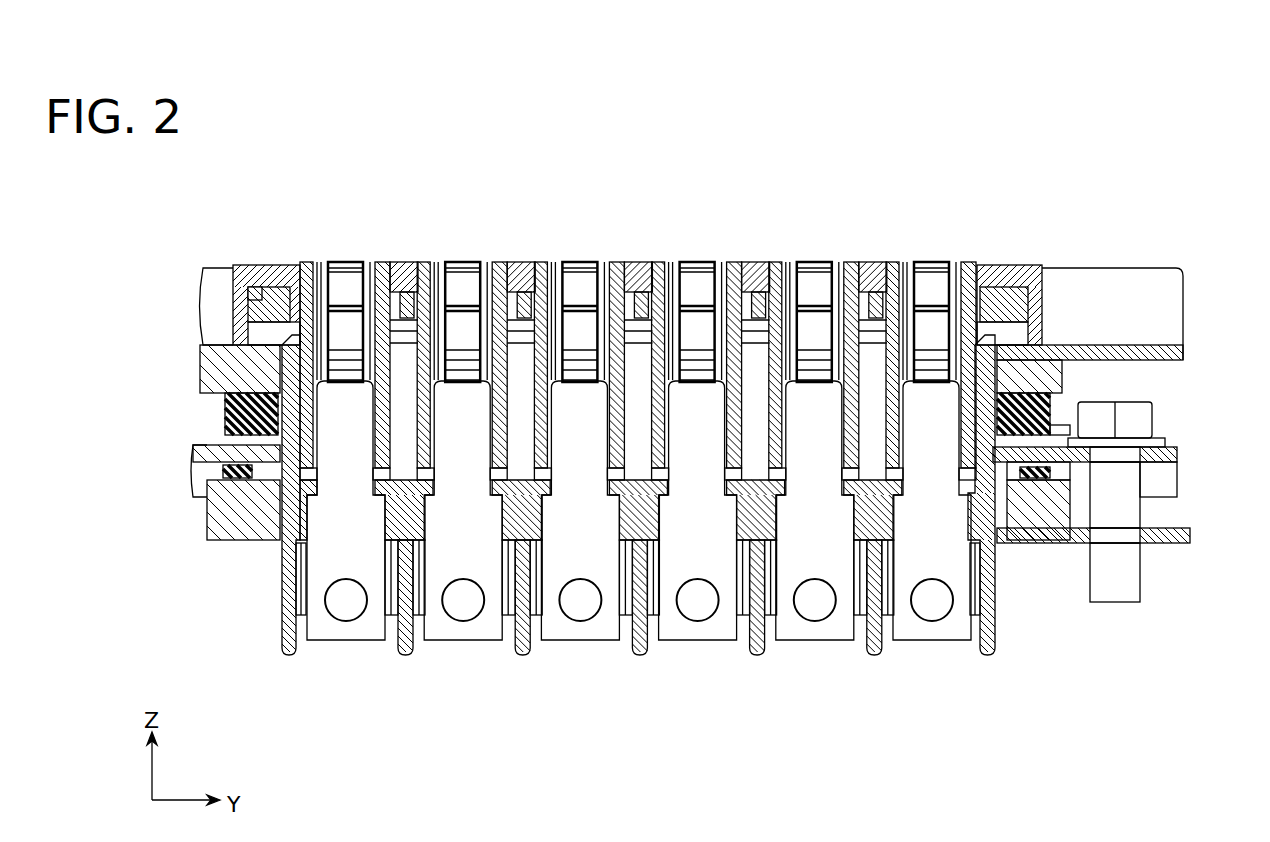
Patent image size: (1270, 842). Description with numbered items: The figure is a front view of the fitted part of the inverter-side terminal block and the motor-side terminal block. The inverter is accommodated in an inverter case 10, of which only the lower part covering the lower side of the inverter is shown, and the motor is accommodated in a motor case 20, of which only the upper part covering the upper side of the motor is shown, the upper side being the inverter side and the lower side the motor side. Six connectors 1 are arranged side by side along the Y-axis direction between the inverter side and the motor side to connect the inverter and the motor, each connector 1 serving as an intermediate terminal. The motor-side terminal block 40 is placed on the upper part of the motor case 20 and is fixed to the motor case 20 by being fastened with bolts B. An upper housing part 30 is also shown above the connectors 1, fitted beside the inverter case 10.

The connector 1 is at (338, 258).
The housing cap 30 is at (1012, 266).
The inverter case 10 is at (1140, 343).
The bolt B is at (1153, 420).
The motor-side terminal block 40 is at (1153, 463).
The motor case 20 is at (1158, 543).